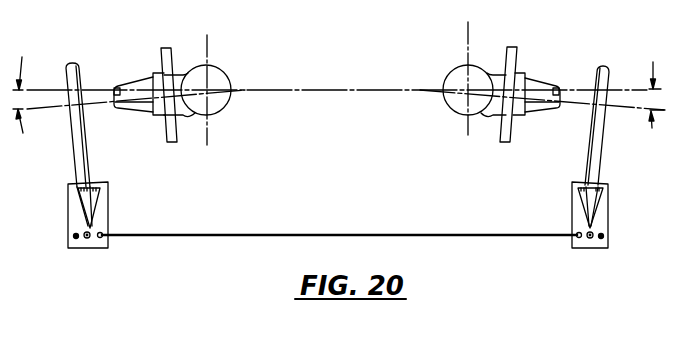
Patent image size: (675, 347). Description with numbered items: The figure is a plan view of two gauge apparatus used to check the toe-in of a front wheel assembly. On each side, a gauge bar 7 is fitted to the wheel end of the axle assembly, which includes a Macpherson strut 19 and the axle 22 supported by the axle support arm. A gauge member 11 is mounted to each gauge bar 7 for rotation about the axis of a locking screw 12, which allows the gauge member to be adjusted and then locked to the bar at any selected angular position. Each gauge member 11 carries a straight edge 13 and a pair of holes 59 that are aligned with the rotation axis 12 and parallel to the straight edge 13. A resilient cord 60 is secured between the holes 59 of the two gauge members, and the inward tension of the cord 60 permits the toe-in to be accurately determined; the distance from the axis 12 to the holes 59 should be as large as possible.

The gauge bar 7 is at (84, 177).
The gauge member 11 is at (100, 216).
The locking screw 12 is at (87, 247).
The straight edge 13 is at (78, 248).
The Macpherson strut 19 is at (213, 78).
The axle 22 is at (145, 83).
The holes 59 is at (68, 246).
The resilient cord 60 is at (280, 233).